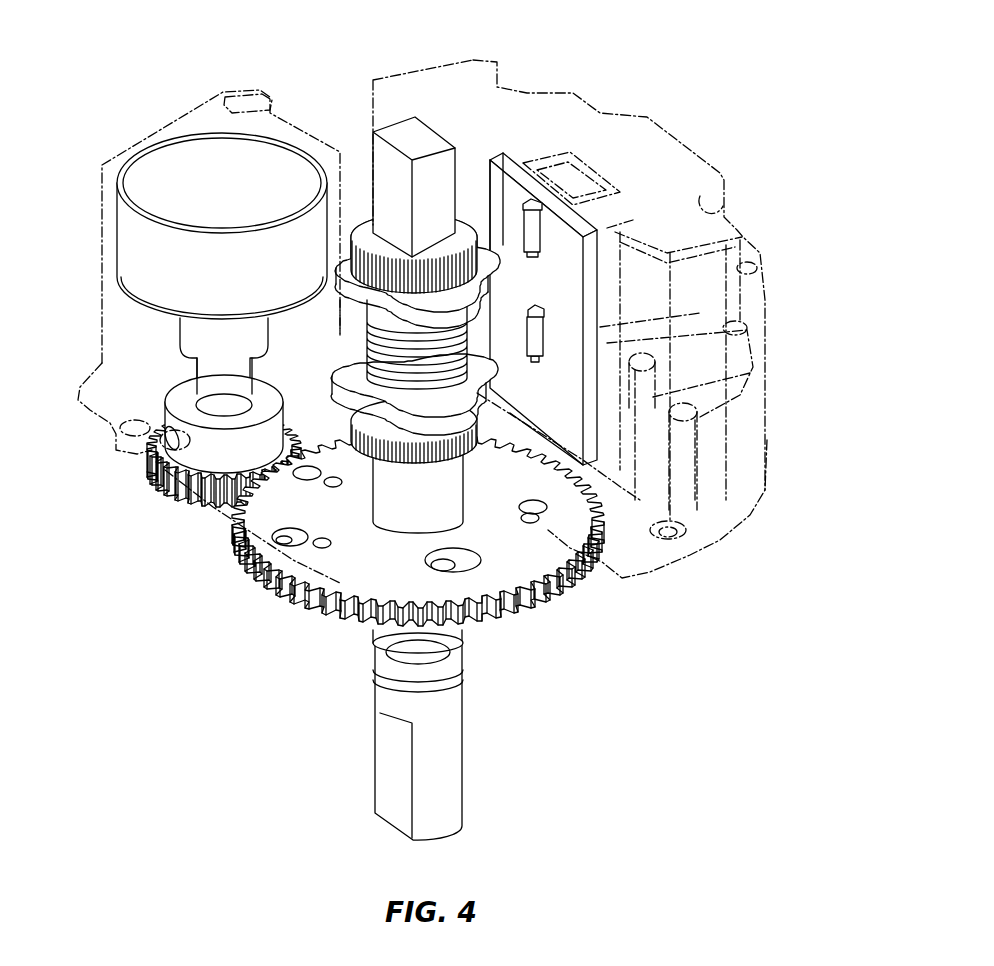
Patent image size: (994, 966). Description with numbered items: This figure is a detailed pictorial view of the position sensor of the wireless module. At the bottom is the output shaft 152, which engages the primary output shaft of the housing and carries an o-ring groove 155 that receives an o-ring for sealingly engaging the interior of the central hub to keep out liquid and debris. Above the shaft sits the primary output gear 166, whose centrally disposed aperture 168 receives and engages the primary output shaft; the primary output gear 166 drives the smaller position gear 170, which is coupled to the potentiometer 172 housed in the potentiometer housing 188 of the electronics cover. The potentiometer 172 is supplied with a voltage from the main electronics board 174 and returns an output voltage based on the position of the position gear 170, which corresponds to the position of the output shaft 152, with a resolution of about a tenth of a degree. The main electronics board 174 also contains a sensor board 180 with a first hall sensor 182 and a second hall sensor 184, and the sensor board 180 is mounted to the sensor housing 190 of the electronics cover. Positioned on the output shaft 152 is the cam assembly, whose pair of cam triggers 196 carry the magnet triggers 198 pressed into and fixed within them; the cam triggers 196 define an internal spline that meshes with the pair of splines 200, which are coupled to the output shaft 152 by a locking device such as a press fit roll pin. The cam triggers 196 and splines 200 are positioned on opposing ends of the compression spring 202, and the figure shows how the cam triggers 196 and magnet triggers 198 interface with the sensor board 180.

The output shaft 152 is at (453, 790).
The o-ring groove 155 is at (455, 653).
The primary output gear 166 is at (498, 620).
The centrally disposed aperture 168 is at (375, 535).
The position gear 170 is at (170, 497).
The potentiometer 172 is at (195, 157).
The main electronics board 174 is at (647, 567).
The sensor board 180 is at (497, 366).
The first hall sensor 182 is at (555, 245).
The second hall sensor 184 is at (543, 335).
The potentiometer housing 188 is at (100, 240).
The sensor housing 190 is at (527, 83).
The cam triggers 196 is at (372, 330).
The magnet triggers 198 is at (265, 223).
The splines 200 is at (357, 262).
The compression spring 202 is at (570, 367).